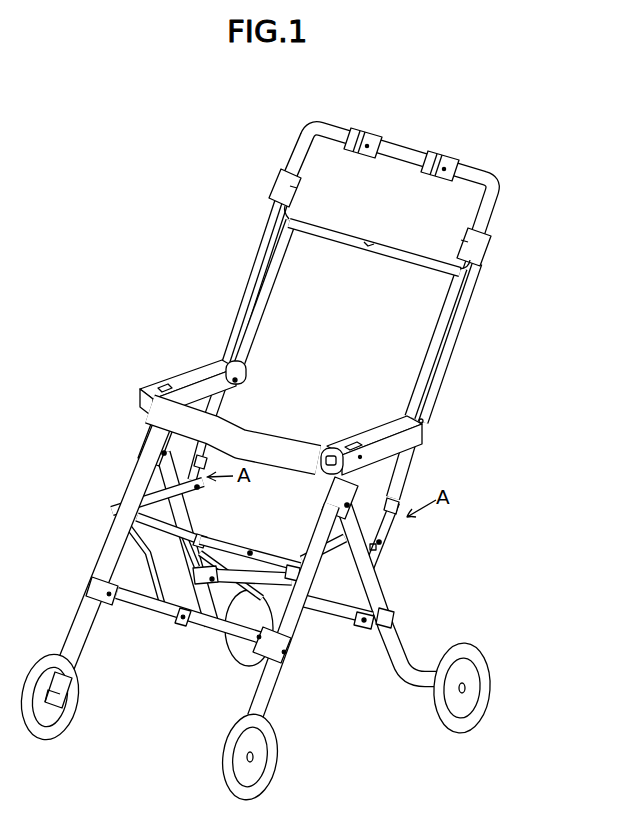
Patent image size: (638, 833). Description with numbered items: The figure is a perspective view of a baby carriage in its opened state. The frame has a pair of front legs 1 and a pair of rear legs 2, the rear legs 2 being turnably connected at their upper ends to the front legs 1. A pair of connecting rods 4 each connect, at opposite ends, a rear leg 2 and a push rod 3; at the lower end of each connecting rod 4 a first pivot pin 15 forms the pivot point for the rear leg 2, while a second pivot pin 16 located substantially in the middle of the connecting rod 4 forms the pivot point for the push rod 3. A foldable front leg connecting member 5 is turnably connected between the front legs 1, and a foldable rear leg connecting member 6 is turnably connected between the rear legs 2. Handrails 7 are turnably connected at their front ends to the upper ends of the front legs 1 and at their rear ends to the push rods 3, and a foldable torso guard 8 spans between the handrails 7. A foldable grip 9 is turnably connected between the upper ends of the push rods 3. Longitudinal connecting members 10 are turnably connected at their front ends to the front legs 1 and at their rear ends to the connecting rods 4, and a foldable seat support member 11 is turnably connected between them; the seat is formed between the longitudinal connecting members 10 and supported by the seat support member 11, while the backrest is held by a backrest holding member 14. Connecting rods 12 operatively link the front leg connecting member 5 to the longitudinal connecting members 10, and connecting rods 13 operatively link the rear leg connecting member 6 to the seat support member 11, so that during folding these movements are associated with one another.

The front legs 1 is at (82, 617).
The rear legs 2 is at (208, 618).
The push rods 3 is at (251, 282).
The connecting rods 4 is at (203, 470).
The front leg connecting member 5 is at (143, 610).
The rear leg connecting member 6 is at (330, 613).
The handrails 7 is at (187, 375).
The torso guard 8 is at (253, 443).
The grip 9 is at (478, 172).
The longitudinal connecting members 10 is at (120, 503).
The seat support member 11 is at (213, 535).
The connecting rods 12 is at (150, 555).
The connecting rods 13 is at (267, 566).
The backrest holding member 14 is at (266, 302).
The first pivot pin 15 is at (373, 568).
The second pivot pin 16 is at (383, 540).